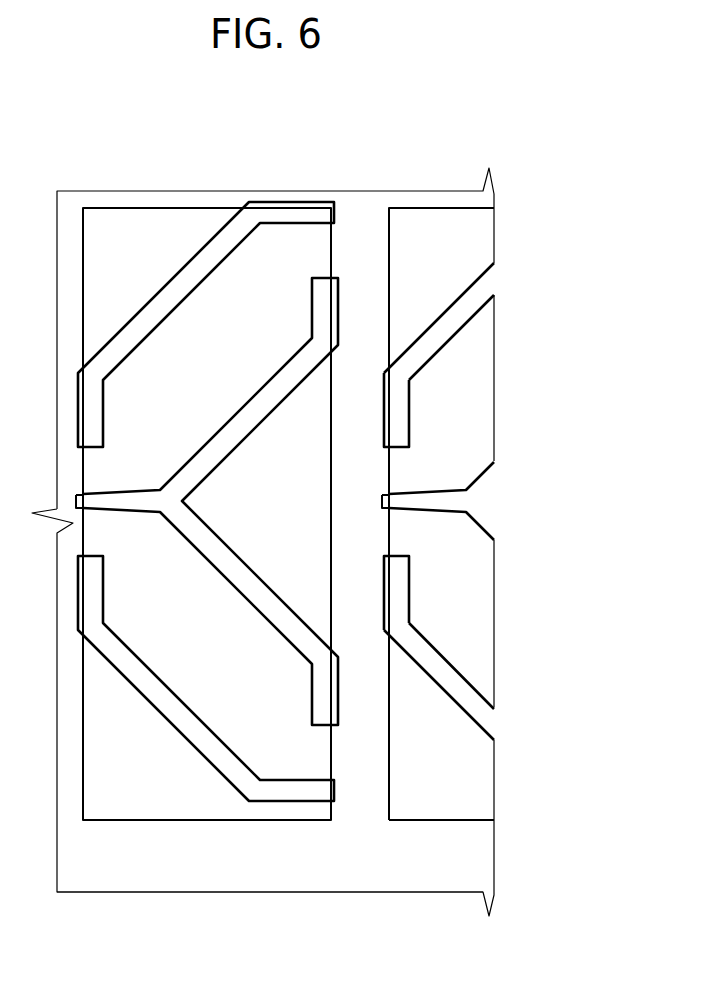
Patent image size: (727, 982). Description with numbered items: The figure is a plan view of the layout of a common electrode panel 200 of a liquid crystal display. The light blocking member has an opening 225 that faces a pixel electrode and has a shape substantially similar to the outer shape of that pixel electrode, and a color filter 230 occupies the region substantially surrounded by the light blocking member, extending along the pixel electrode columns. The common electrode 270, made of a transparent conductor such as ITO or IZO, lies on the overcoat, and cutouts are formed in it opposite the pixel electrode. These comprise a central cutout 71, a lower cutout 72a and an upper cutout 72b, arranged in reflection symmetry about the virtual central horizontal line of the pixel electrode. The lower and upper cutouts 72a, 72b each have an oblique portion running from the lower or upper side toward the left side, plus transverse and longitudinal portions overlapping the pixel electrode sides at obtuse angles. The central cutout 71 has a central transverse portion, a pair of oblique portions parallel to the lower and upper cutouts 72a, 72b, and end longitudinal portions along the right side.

The common electrode panel 200 is at (516, 215).
The opening 225 is at (218, 822).
The color filter 230 is at (120, 878).
The common electrode 270 is at (316, 893).
The central cutout 71 is at (202, 553).
The lower cutout 72a is at (187, 702).
The upper cutout 72b is at (193, 293).